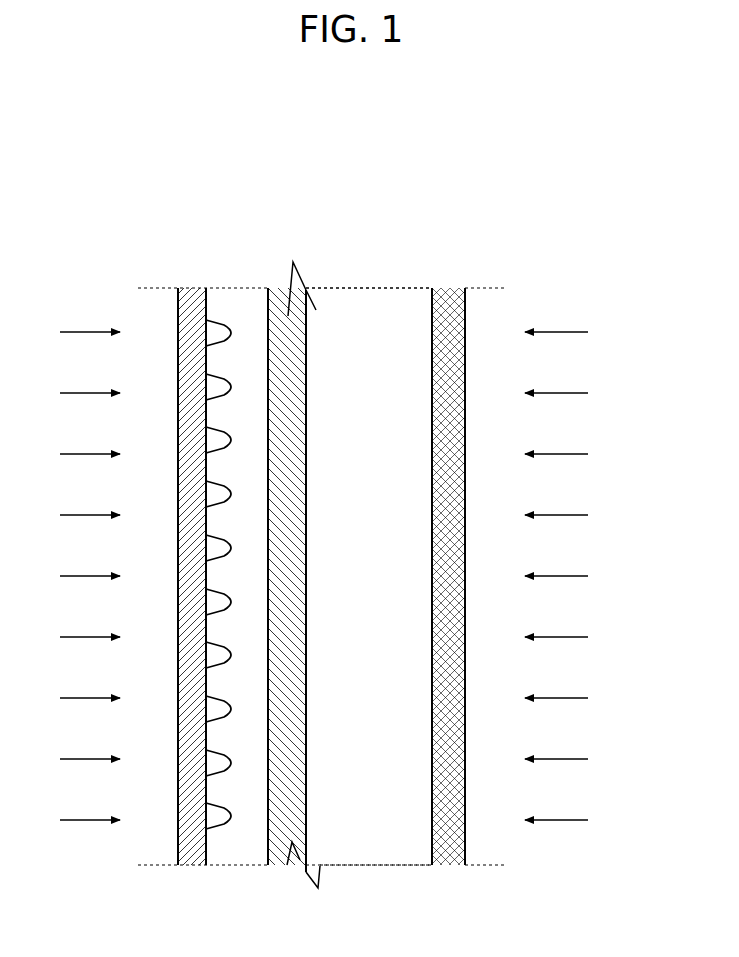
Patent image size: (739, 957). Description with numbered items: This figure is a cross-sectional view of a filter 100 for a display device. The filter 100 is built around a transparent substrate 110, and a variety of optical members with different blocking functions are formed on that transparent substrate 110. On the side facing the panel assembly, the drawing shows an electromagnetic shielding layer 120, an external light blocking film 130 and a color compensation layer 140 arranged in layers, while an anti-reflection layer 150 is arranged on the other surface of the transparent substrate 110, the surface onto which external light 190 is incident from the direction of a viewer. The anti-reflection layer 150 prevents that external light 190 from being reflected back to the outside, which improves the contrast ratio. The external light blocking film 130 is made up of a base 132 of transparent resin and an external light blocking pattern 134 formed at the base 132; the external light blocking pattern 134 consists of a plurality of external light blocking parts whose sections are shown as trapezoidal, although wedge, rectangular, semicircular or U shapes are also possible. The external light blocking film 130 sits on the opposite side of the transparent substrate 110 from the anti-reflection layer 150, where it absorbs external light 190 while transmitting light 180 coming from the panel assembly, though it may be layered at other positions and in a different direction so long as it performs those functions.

The filter 100 is at (563, 172).
The transparent substrate 110 is at (370, 305).
The electromagnetic shielding layer 120 is at (293, 305).
The external light blocking film 130 is at (208, 193).
The base 132 is at (256, 305).
The external light blocking pattern 134 is at (227, 322).
The color compensation layer 140 is at (195, 305).
The anti-reflection layer 150 is at (446, 303).
The light 180 is at (88, 332).
The external light 190 is at (560, 332).